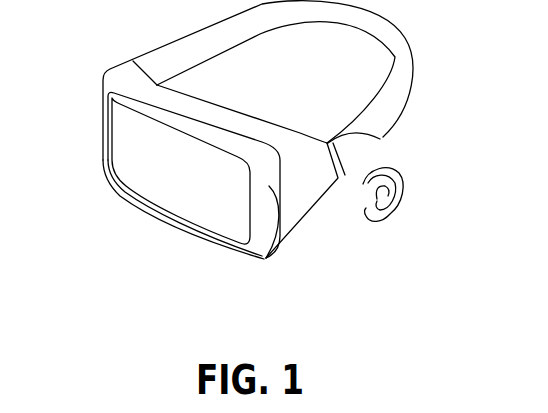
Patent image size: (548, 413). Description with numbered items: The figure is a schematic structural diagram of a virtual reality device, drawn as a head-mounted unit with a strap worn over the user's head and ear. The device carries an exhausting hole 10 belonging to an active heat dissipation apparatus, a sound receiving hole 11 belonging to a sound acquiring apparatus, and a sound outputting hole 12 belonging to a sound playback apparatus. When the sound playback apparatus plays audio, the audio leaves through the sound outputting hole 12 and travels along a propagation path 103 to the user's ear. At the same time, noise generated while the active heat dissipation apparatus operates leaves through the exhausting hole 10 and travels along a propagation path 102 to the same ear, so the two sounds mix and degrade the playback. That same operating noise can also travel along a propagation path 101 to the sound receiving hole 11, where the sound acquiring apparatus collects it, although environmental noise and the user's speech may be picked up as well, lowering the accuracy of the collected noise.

The exhausting hole 10 is at (136, 154).
The propagation path 101 is at (156, 214).
The sound receiving hole 11 is at (196, 237).
The propagation path 102 is at (265, 258).
The sound outputting hole 12 is at (380, 139).
The propagation path 103 is at (345, 175).